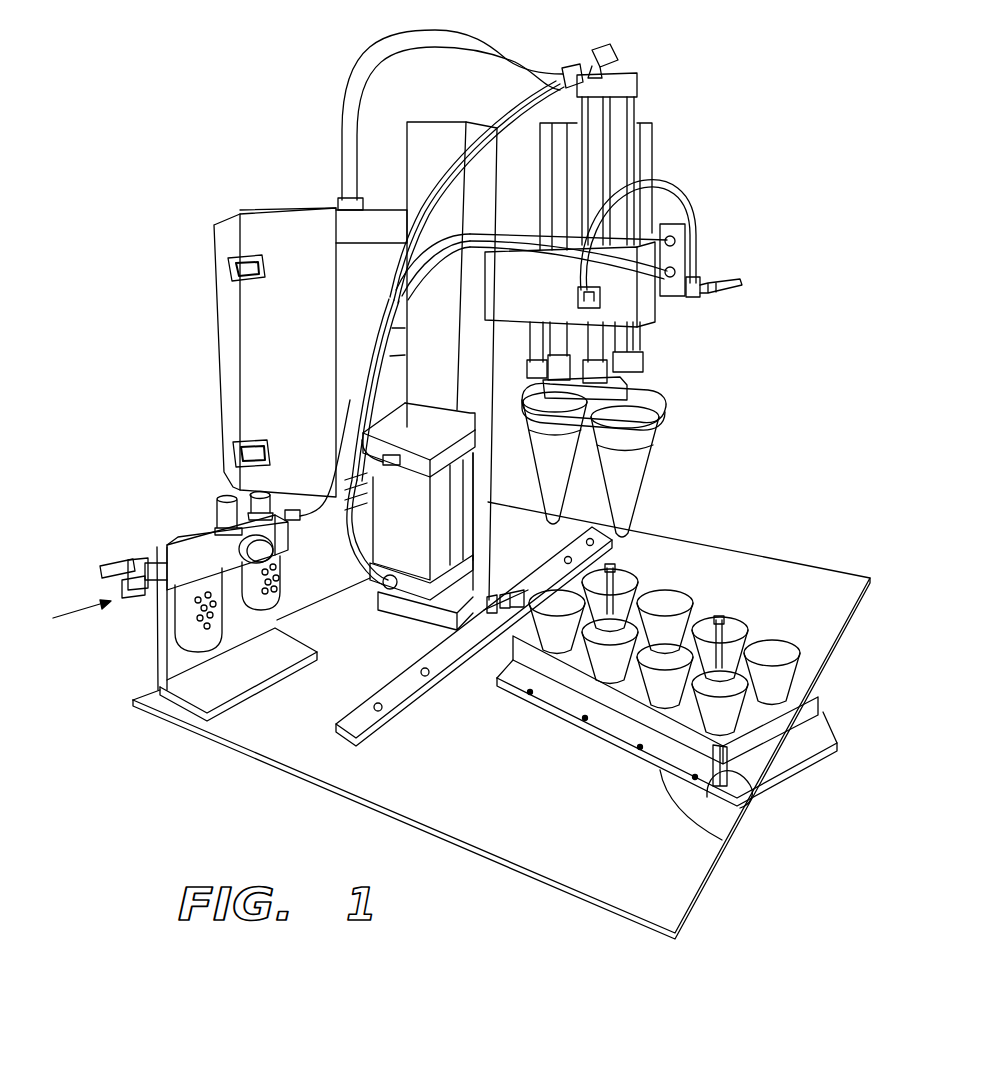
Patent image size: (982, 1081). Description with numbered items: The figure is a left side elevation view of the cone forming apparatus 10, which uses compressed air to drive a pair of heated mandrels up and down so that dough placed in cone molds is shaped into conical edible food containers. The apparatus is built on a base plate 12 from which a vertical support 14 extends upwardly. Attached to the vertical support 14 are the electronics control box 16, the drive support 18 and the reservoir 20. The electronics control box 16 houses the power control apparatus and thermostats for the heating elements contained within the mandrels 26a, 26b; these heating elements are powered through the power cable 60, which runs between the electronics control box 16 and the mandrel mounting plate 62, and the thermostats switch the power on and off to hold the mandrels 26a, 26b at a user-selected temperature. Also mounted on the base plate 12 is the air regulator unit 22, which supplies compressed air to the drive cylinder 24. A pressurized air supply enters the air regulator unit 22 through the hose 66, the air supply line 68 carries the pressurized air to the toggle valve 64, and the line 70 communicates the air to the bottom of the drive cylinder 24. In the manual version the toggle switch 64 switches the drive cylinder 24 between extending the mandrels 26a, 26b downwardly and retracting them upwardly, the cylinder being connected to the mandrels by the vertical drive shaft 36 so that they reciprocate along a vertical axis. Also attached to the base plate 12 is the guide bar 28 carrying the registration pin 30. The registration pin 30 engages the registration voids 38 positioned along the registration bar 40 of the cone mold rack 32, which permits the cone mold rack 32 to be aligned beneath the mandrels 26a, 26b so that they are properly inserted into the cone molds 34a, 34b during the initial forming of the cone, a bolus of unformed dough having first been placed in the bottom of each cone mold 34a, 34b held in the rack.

The cone forming apparatus 10 is at (774, 184).
The base plate 12 is at (501, 720).
The vertical support 14 is at (421, 361).
The electronics control box 16 is at (275, 352).
The drive support 18 is at (585, 275).
The reservoir 20 is at (419, 516).
The air regulator unit 22 is at (178, 524).
The drive cylinder 24 is at (632, 106).
The mandrel 26a is at (557, 458).
The mandrel 26b is at (625, 471).
The guide bar 28 is at (383, 700).
The registration pin 30 is at (514, 598).
The cone mold rack 32 is at (820, 712).
The cone mold 34a is at (638, 650).
The cone mold 34b is at (773, 672).
The drive shaft 36 is at (633, 365).
The registration voids 38 is at (722, 840).
The registration bar 40 is at (750, 790).
The power cable 60 is at (345, 133).
The mandrel mounting plate 62 is at (668, 395).
The toggle switch 64 is at (703, 290).
The hose 66 is at (65, 618).
The air supply line 68 is at (304, 517).
The line 70 is at (688, 201).